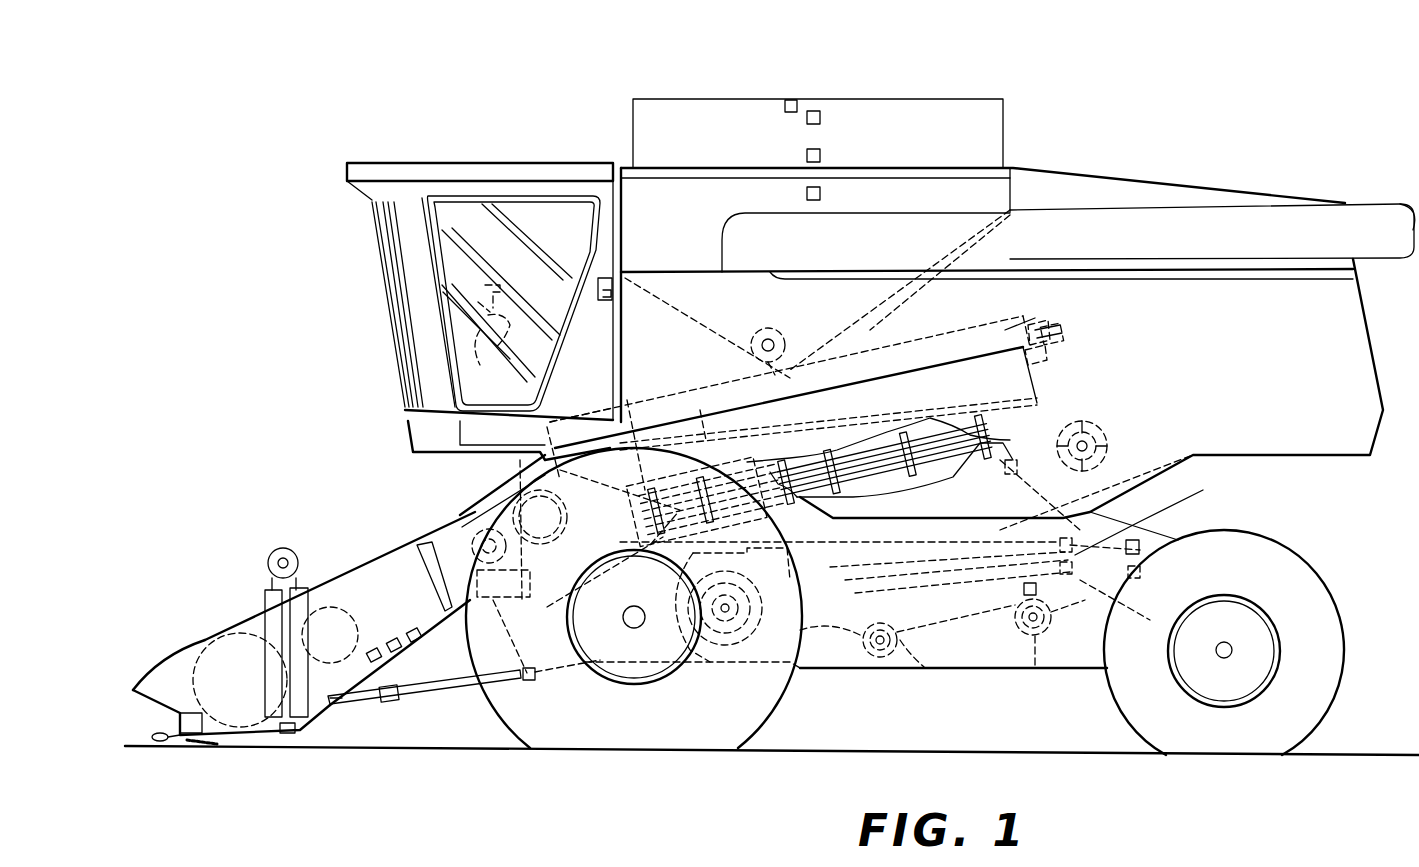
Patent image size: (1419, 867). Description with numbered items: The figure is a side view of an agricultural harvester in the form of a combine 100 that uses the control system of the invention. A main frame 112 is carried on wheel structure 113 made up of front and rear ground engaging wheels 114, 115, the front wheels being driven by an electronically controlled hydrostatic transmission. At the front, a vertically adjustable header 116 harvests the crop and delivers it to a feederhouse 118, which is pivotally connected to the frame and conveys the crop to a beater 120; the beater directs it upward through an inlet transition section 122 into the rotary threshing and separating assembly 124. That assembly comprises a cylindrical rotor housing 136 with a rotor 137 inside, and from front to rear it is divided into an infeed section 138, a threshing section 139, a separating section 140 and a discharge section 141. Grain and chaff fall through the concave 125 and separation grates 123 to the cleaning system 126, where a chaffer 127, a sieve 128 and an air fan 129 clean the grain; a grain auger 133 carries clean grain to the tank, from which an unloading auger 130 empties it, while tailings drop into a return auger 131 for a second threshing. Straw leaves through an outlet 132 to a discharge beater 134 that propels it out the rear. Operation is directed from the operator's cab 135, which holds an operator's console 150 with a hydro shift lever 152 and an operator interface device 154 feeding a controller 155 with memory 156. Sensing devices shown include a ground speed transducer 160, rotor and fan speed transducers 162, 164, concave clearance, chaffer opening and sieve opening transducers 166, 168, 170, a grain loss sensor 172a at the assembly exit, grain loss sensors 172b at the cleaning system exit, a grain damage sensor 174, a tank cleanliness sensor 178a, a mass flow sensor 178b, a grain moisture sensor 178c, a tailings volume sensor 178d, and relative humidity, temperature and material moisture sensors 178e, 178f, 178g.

The combine 100 is at (1112, 72).
The main frame 112 is at (1123, 505).
The wheel structure 113 is at (780, 740).
The front ground engaging wheels 114 is at (720, 750).
The rear ground engaging wheels 115 is at (1120, 704).
The header 116 is at (210, 605).
The feederhouse 118 is at (390, 560).
The beater 120 is at (510, 500).
The inlet transition section 122 is at (540, 474).
The separation grates 123 is at (935, 472).
The rotary threshing and separating assembly 124 is at (717, 410).
The concave 125 is at (733, 605).
The cleaning system 126 is at (880, 546).
The chaffer 127 is at (1095, 555).
The sieve 128 is at (1068, 586).
The air fan 129 is at (718, 665).
The unloading auger 130 is at (1360, 244).
The return auger 131 is at (1035, 668).
The outlet 132 is at (1060, 380).
The grain auger 133 is at (922, 668).
The discharge beater 134 is at (1110, 428).
The operator's cab 135 is at (498, 163).
The rotor housing 136 is at (990, 315).
The rotor 137 is at (1058, 325).
The infeed section 138 is at (585, 415).
The threshing section 139 is at (728, 372).
The separating section 140 is at (905, 335).
The discharge section 141 is at (1040, 310).
The operator's console 150 is at (528, 268).
The hydro shift lever 152 is at (478, 285).
The operator interface device 154 is at (490, 350).
The controller 155 is at (602, 278).
The memory 156 is at (611, 296).
The ground speed transducer 160 is at (547, 607).
The rotor speed transducer 162 is at (650, 470).
The fan speed transducer 164 is at (740, 605).
The concave clearance transducer 166 is at (650, 545).
The chaffer opening transducer 168 is at (1095, 504).
The sieve opening transducer 170 is at (1085, 570).
The grain loss sensor 172a is at (1015, 474).
The grain loss sensors 172b is at (1150, 545).
The grain damage sensor 174 is at (785, 108).
The tank cleanliness sensor 178a is at (820, 117).
The mass flow sensor 178b is at (820, 155).
The grain moisture sensor 178c is at (820, 193).
The tailings volume sensor 178d is at (1024, 592).
The relative humidity sensor 178e is at (380, 695).
The temperature sensor 178f is at (430, 707).
The material moisture sensor 178g is at (445, 652).